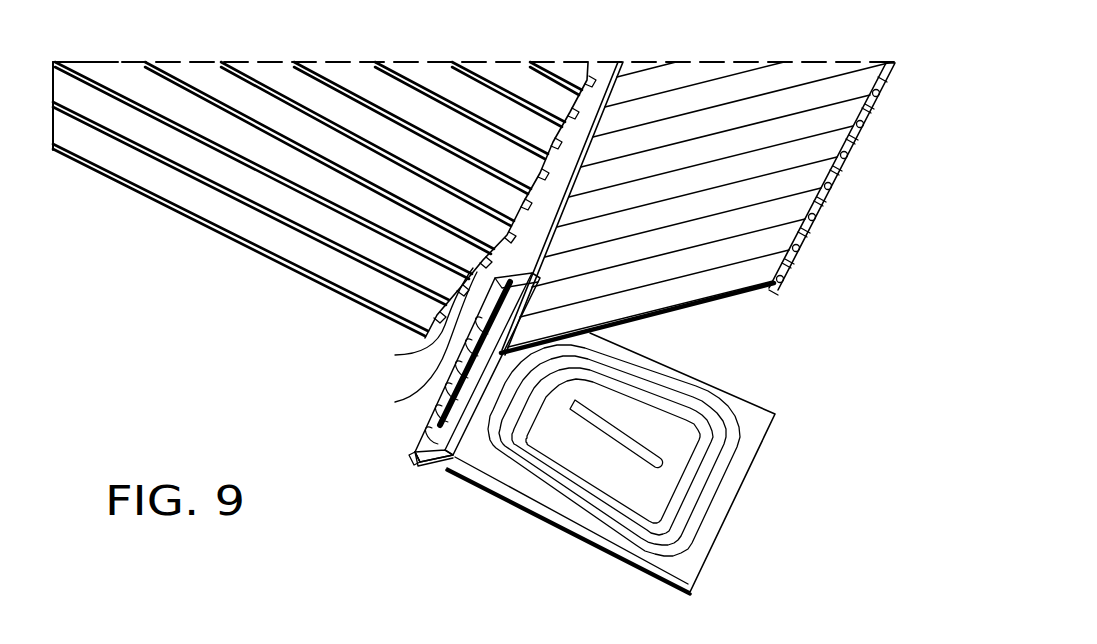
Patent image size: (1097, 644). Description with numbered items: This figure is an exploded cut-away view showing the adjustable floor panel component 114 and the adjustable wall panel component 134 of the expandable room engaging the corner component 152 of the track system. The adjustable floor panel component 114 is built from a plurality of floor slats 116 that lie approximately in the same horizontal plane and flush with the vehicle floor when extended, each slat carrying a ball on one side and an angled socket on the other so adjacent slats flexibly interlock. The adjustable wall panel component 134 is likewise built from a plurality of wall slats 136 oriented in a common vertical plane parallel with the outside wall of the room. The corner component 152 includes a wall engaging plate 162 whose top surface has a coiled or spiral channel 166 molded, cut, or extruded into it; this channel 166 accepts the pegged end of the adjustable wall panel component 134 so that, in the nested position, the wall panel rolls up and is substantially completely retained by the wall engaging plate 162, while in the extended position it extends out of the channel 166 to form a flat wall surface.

The adjustable floor panel component 114 is at (98, 176).
The floor slats 116 is at (395, 402).
The adjustable wall panel component 134 is at (846, 189).
The wall slats 136 is at (862, 150).
The corner component 152 is at (414, 458).
The wall engaging plate 162 is at (738, 389).
The channel 166 is at (700, 523).